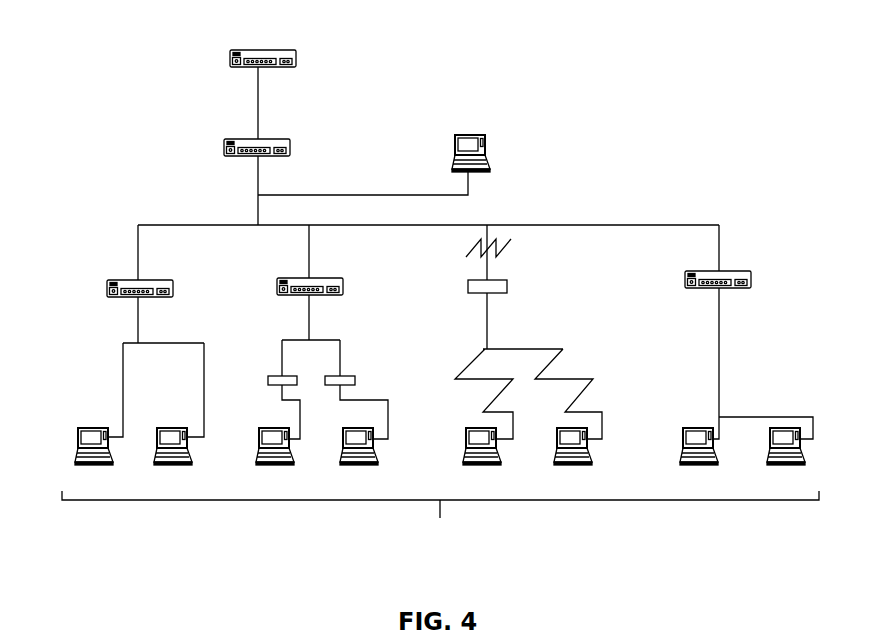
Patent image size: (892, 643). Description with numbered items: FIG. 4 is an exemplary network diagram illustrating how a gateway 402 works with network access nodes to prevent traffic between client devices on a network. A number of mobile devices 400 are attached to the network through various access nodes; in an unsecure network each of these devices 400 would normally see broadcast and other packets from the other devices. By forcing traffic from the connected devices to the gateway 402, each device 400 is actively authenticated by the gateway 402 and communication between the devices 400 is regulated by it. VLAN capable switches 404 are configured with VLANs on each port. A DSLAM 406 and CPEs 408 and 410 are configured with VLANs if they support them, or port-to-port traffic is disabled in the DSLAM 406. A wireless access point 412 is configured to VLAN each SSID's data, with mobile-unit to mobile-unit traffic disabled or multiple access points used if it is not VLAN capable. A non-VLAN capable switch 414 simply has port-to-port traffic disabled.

The mobile device 400 is at (468, 135).
The gateway 402 is at (230, 57).
The VLAN capable switch 404 is at (224, 145).
The DSLAM 406 is at (322, 278).
The CPE 408 is at (283, 376).
The CPE 410 is at (342, 376).
The wireless access point 412 is at (493, 280).
The non-VLAN capable switch 414 is at (751, 283).